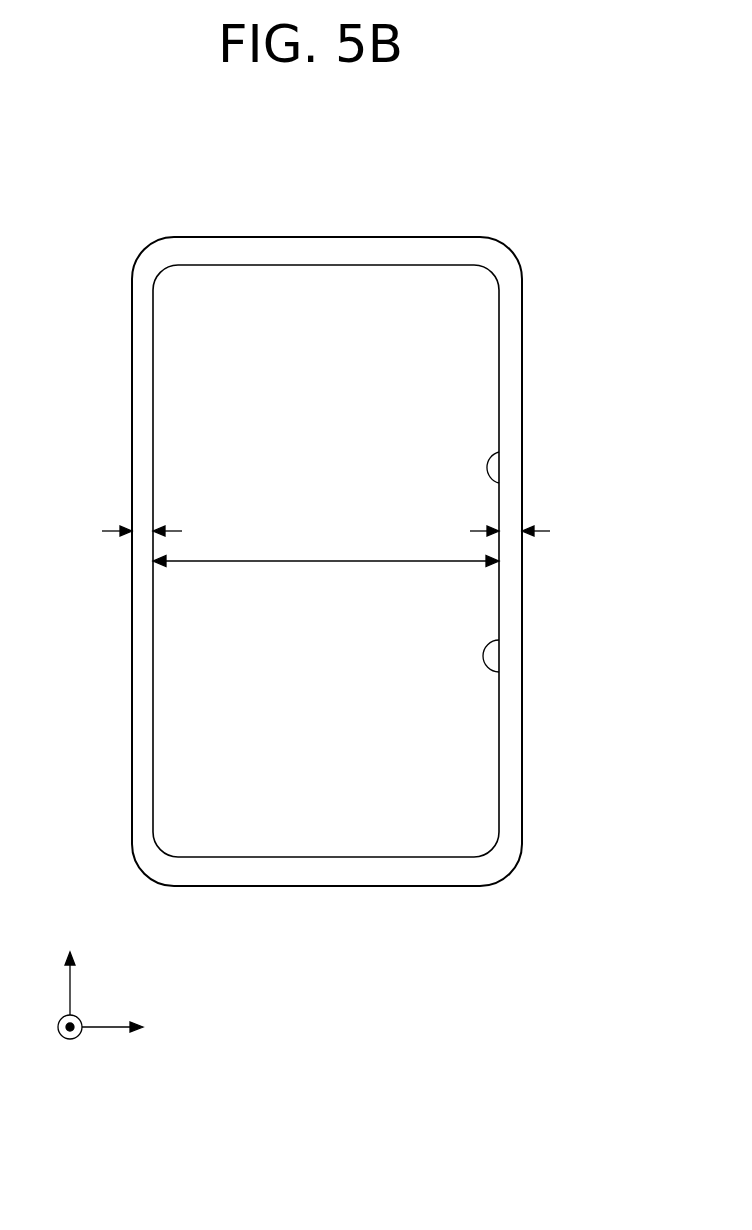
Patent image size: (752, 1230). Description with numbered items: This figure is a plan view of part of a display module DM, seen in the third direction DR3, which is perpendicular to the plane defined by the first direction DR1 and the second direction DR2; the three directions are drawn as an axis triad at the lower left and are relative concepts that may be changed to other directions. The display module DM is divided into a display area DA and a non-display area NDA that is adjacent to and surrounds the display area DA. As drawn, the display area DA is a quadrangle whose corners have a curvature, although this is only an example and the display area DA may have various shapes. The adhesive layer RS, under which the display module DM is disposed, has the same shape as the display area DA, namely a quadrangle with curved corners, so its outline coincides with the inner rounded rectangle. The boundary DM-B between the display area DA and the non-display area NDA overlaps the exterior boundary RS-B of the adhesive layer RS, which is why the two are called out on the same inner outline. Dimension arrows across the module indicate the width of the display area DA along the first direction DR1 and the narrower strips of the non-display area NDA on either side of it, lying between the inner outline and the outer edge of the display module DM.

The display module DM is at (522, 338).
The adhesive layer RS is at (499, 390).
The boundary DM-B is at (499, 452).
The exterior boundary RS-B is at (499, 672).
The non-display area NDA is at (137, 530).
The display area DA is at (326, 549).
The first direction DR1 is at (135, 1027).
The second direction DR2 is at (69, 969).
The third direction DR3 is at (69, 1042).